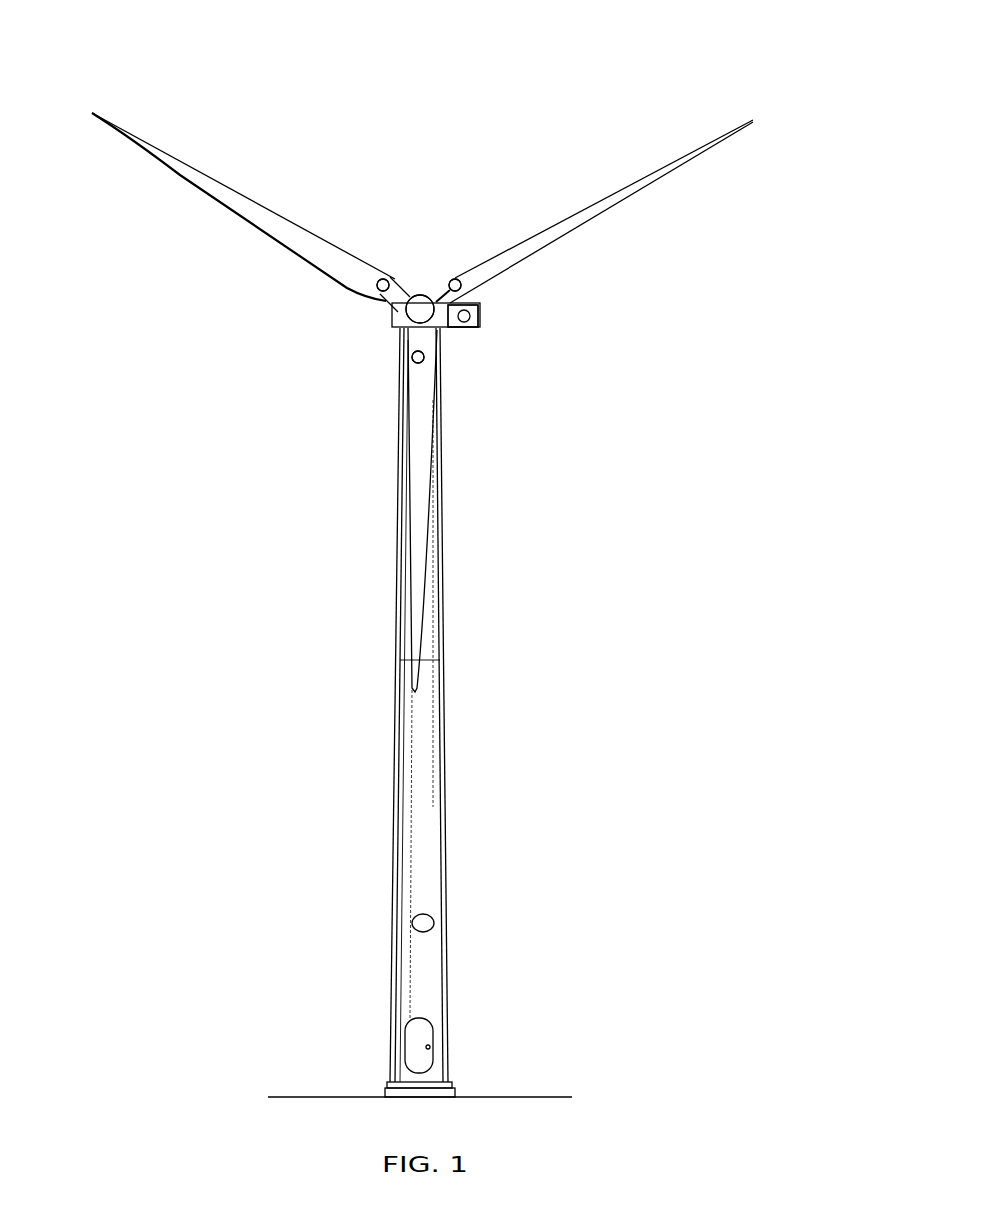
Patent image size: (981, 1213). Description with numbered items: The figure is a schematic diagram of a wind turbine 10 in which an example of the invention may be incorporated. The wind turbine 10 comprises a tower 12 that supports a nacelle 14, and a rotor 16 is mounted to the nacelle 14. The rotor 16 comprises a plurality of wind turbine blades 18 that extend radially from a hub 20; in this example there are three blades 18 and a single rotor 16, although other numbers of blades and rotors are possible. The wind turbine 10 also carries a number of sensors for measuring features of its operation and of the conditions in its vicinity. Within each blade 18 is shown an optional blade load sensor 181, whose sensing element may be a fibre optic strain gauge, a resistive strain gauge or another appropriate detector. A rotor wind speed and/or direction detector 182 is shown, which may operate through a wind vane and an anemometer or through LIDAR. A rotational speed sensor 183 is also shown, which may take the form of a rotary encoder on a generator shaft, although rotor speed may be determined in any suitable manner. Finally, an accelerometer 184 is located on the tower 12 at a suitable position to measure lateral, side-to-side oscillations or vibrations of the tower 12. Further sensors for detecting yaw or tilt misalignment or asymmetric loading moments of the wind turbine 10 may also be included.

The wind turbine 10 is at (645, 100).
The tower 12 is at (432, 758).
The nacelle 14 is at (447, 328).
The rotor 16 is at (386, 344).
The wind turbine blade 18 is at (316, 246).
The hub 20 is at (430, 298).
The blade load sensor 181 is at (386, 279).
The rotor wind speed and/or direction detector 182 is at (480, 307).
The rotational speed sensor 183 is at (428, 296).
The accelerometer 184 is at (432, 932).